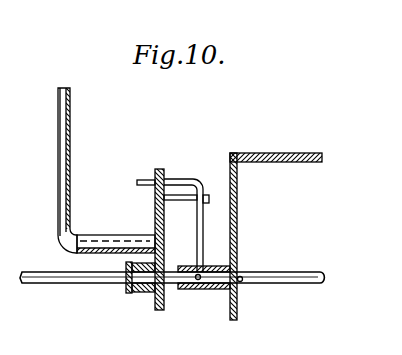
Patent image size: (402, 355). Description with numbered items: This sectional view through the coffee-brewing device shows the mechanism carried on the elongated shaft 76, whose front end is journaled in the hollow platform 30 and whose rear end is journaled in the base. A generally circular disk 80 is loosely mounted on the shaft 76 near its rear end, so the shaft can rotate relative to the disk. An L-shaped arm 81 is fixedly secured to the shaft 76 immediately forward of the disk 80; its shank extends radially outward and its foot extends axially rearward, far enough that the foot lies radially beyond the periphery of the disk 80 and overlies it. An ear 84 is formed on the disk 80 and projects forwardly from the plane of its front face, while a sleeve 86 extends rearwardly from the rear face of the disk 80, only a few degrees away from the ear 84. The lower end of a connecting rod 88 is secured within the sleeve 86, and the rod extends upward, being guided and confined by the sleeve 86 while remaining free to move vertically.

The platform 30 is at (238, 302).
The elongated shaft 76 is at (77, 284).
The disk 80 is at (150, 293).
The L-shaped arm 81 is at (183, 178).
The ear 84 is at (205, 194).
The sleeve 86 is at (113, 243).
The connecting rod 88 is at (68, 135).